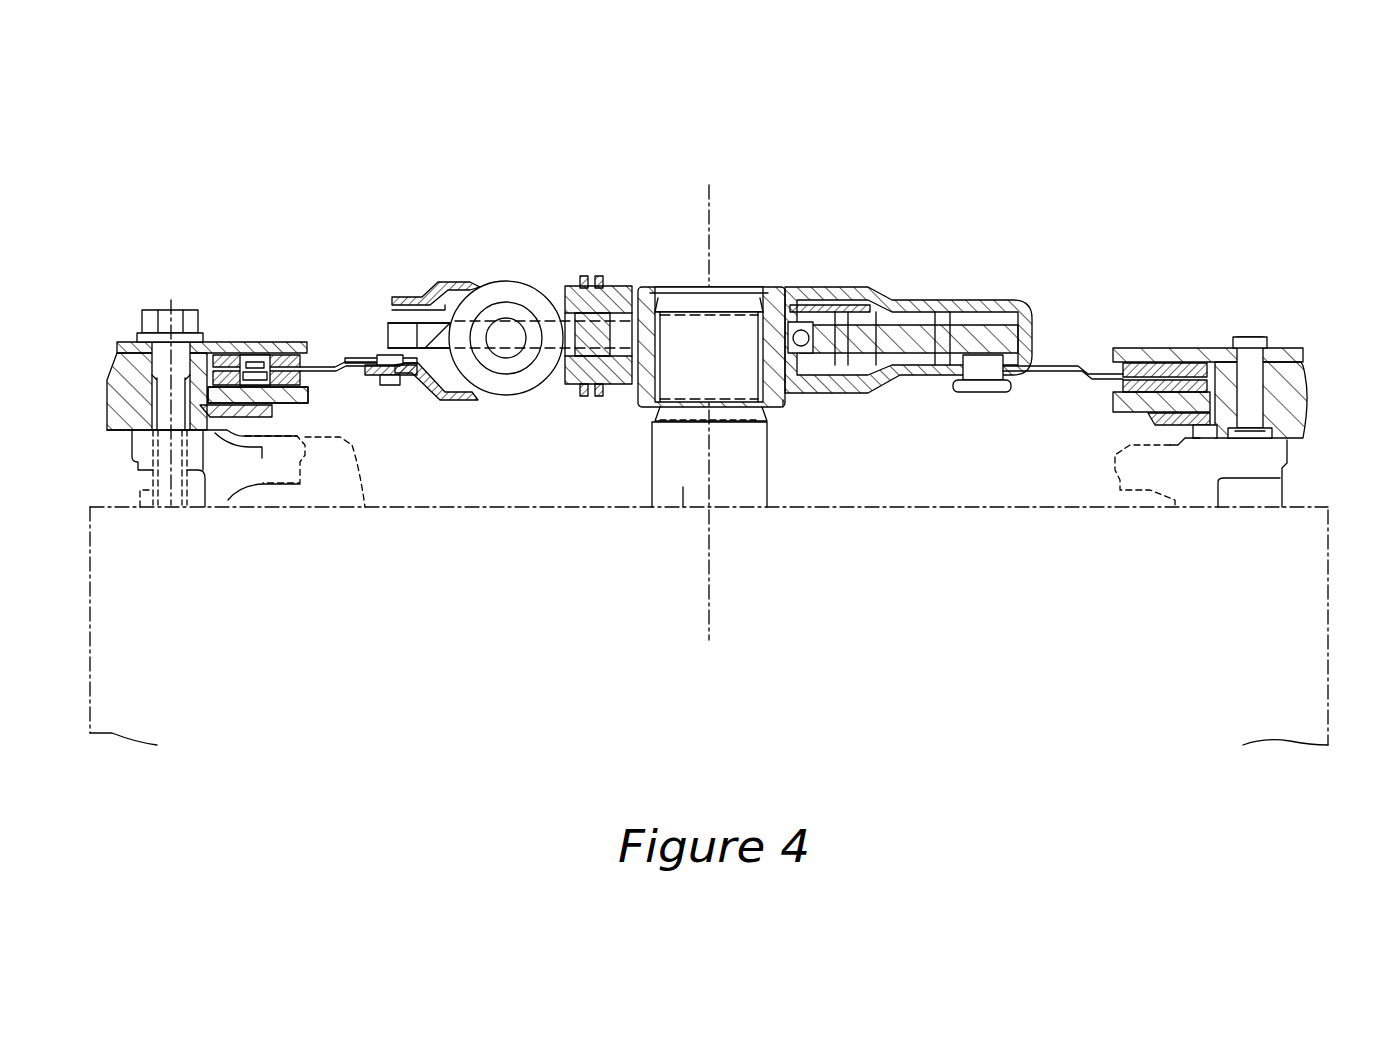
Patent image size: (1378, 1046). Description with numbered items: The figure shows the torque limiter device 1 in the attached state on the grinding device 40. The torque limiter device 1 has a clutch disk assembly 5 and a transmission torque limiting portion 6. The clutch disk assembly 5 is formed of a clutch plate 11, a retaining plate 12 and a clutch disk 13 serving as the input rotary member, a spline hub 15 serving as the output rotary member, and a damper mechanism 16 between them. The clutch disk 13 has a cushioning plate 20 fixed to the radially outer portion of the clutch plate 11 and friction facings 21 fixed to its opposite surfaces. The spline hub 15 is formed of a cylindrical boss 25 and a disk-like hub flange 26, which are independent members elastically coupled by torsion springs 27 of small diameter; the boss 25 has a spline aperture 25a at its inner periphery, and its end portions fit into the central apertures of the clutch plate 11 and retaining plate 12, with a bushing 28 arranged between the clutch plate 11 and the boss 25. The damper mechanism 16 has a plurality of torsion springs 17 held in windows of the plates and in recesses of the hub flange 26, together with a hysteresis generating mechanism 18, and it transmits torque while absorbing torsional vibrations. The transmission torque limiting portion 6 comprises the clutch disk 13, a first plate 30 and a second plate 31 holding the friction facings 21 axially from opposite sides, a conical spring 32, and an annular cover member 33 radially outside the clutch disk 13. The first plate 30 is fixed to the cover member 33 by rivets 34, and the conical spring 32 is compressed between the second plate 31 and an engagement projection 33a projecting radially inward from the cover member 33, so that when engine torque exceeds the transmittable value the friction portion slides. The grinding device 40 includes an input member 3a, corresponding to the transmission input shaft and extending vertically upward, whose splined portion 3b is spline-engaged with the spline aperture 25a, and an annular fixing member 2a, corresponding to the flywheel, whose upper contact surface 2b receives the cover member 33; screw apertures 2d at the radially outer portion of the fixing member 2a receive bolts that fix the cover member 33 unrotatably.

The torque limiter device 1 is at (327, 172).
The fixing member 2a is at (228, 495).
The contact surface 2b is at (123, 408).
The screw apertures 2d is at (160, 490).
The input member 3a is at (683, 487).
The splined portion 3b is at (785, 400).
The clutch disk assembly 5 is at (366, 322).
The transmission torque limiting portion 6 is at (228, 332).
The clutch plate 11 is at (435, 398).
The retaining plate 12 is at (423, 282).
The clutch disk 13 is at (318, 393).
The spline hub 15 is at (634, 433).
The damper mechanism 16 is at (498, 272).
The torsion springs 17 is at (528, 278).
The hysteresis generating mechanism 18 is at (566, 358).
The cushioning plate 20 is at (340, 385).
The friction facings 21 is at (300, 372).
The boss 25 is at (632, 395).
The spline aperture 25a is at (705, 405).
The hub flange 26 is at (371, 302).
The torsion springs of small diameter 27 is at (853, 390).
The bushing 28 is at (795, 405).
The first plate 30 is at (117, 345).
The second plate 31 is at (295, 403).
The conical spring 32 is at (213, 433).
The cover member 33 is at (110, 380).
The engagement projection 33a is at (222, 436).
The rivets 34 is at (1245, 338).
The grinding device 40 is at (1305, 565).